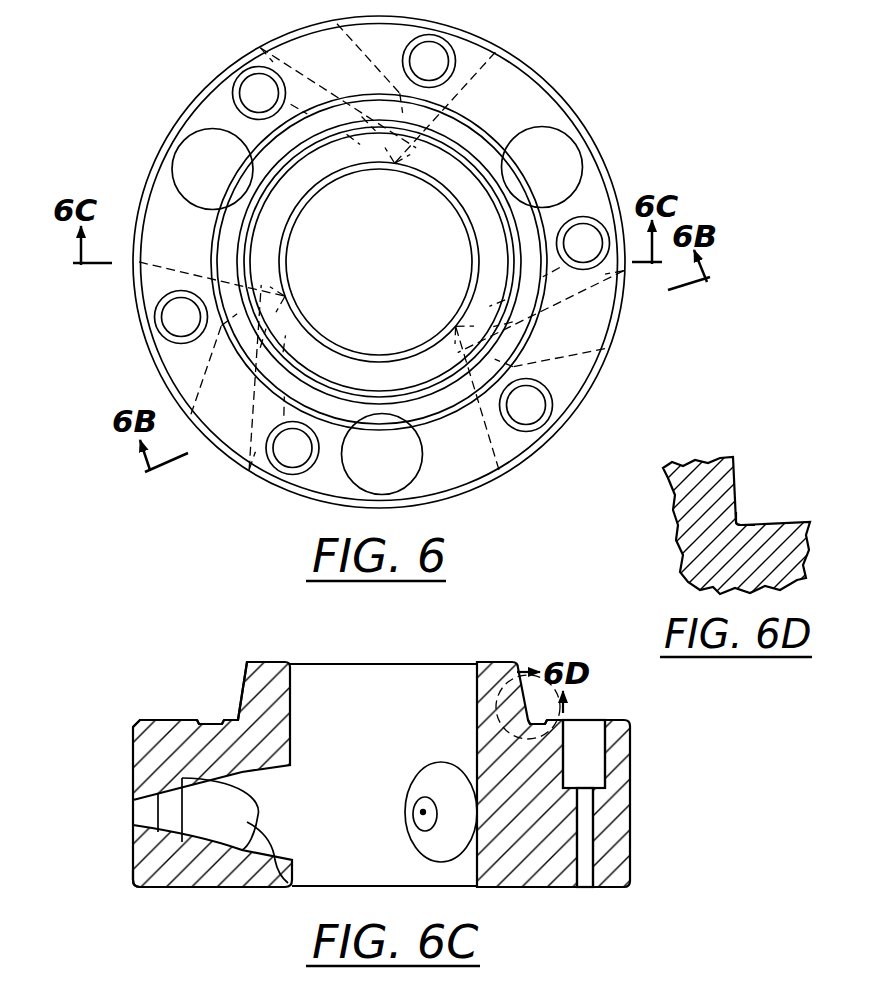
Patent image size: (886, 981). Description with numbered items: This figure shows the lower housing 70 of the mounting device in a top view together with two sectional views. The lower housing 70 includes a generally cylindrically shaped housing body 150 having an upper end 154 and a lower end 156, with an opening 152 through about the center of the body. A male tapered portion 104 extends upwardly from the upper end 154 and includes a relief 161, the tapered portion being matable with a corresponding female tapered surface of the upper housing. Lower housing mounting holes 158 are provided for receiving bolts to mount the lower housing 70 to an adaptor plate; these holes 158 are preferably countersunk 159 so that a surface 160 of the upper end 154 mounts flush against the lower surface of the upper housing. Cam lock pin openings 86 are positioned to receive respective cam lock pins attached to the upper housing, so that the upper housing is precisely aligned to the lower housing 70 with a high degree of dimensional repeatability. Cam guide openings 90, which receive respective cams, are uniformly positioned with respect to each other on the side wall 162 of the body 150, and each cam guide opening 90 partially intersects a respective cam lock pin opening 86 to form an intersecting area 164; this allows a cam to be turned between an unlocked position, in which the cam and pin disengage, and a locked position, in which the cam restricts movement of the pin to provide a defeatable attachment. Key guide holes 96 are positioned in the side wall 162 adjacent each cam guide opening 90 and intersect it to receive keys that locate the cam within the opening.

In FIG. 6, the lower housing 70 is at (672, 97).
In FIG. 6C, the lower housing 70 is at (118, 672).
In FIG. 6, the cam lock pin opening 86 is at (177, 151).
In FIG. 6, the cam guide opening 90 is at (493, 63).
In FIG. 6C, the cam guide opening 90 is at (150, 811).
In FIG. 6, the key guide hole 96 is at (292, 43).
In FIG. 6C, the key guide hole 96 is at (423, 812).
In FIG. 6C, the male tapered portion 104 is at (243, 683).
In FIG. 6, the housing body 150 is at (603, 159).
In FIG. 6C, the housing body 150 is at (133, 765).
In FIG. 6, the opening 152 is at (420, 273).
In FIG. 6C, the opening 152 is at (343, 676).
In FIG. 6C, the upper end 154 is at (176, 718).
In FIG. 6C, the lower end 156 is at (160, 888).
In FIG. 6, the lower housing mounting hole 158 is at (236, 89).
In FIG. 6C, the lower housing mounting hole 158 is at (591, 730).
In FIG. 6C, the countersink 159 is at (597, 787).
In FIG. 6C, the surface 160 is at (219, 721).
In FIG. 6D, the surface 160 is at (800, 519).
In FIG. 6D, the relief 161 is at (744, 521).
In FIG. 6, the side wall 162 is at (596, 380).
In FIG. 6C, the side wall 162 is at (632, 822).
In FIG. 6C, the intersecting area 164 is at (268, 878).